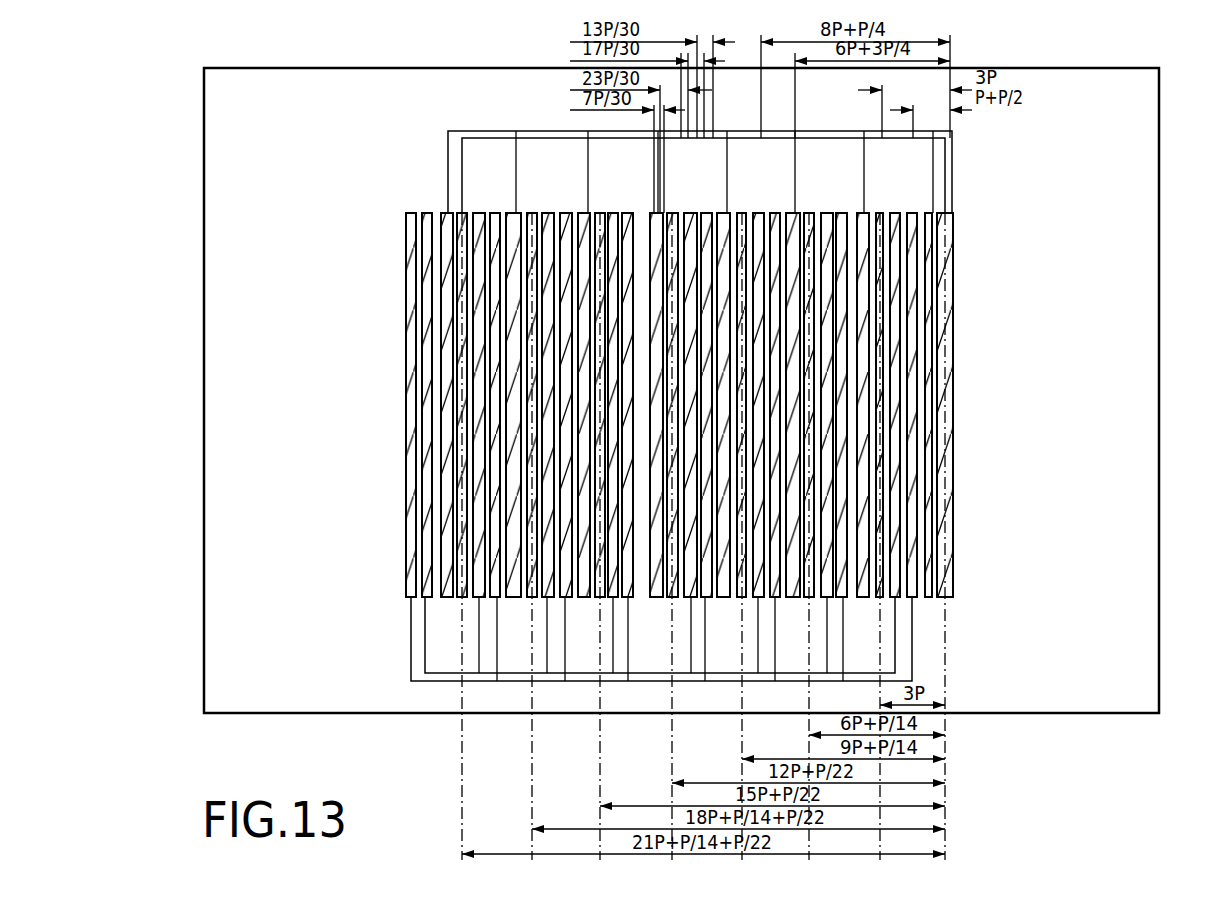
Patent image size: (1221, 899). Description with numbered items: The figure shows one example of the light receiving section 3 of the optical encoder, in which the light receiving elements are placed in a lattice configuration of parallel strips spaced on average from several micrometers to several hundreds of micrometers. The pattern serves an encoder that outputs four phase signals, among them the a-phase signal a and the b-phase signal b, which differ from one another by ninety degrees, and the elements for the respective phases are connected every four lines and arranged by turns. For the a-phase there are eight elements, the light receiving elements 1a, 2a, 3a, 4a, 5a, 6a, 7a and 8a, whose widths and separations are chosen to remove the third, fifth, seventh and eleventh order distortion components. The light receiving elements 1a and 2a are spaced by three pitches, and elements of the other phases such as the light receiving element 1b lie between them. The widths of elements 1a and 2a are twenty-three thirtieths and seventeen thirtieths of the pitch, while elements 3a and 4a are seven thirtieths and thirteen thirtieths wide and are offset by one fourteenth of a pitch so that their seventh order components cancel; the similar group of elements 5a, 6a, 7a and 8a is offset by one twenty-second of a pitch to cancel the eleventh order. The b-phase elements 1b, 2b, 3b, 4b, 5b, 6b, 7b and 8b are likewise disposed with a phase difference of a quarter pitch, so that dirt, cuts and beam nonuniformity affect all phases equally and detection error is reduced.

The light receiving section 3 is at (1159, 143).
The a-phase signal a is at (515, 138).
The b-phase signal b is at (455, 131).
The light receiving element 1a is at (950, 212).
The light receiving element 2a is at (881, 212).
The light receiving element 3a is at (810, 212).
The light receiving element 4a is at (743, 212).
The light receiving element 5a is at (674, 212).
The light receiving element 6a is at (604, 212).
The light receiving element 7a is at (534, 212).
The light receiving element 8a is at (464, 212).
The light receiving element 1b is at (912, 600).
The light receiving element 2b is at (842, 600).
The light receiving element 3b is at (775, 600).
The light receiving element 4b is at (706, 600).
The light receiving element 5b is at (629, 600).
The light receiving element 6b is at (566, 600).
The light receiving element 7b is at (494, 600).
The light receiving element 8b is at (428, 600).